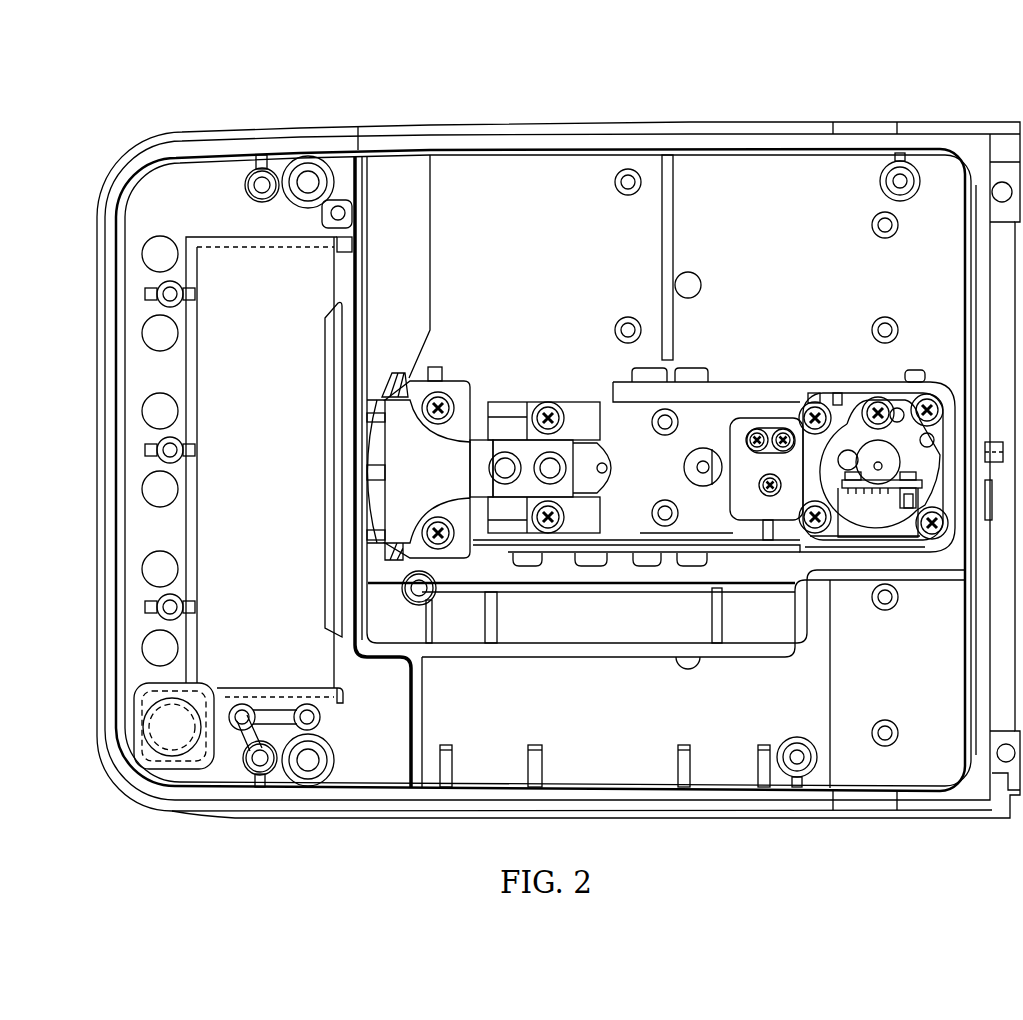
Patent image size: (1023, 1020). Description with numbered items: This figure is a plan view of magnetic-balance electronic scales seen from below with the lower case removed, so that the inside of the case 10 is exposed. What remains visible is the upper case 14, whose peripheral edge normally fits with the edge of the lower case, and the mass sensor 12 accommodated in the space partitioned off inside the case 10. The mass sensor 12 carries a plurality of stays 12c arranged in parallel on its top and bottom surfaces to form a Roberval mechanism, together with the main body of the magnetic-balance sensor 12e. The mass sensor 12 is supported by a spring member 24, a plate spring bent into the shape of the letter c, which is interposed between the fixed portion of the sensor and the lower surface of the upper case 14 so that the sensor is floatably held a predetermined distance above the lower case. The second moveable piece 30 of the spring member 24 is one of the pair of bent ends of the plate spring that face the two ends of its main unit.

The case 10 is at (416, 118).
The upper case 14 is at (652, 130).
The mass sensor 12 is at (789, 380).
The stays 12c is at (610, 413).
The main body of the magnetic-balance sensor 12e is at (888, 430).
The spring member 24 is at (461, 434).
The second moveable piece 30 is at (465, 477).